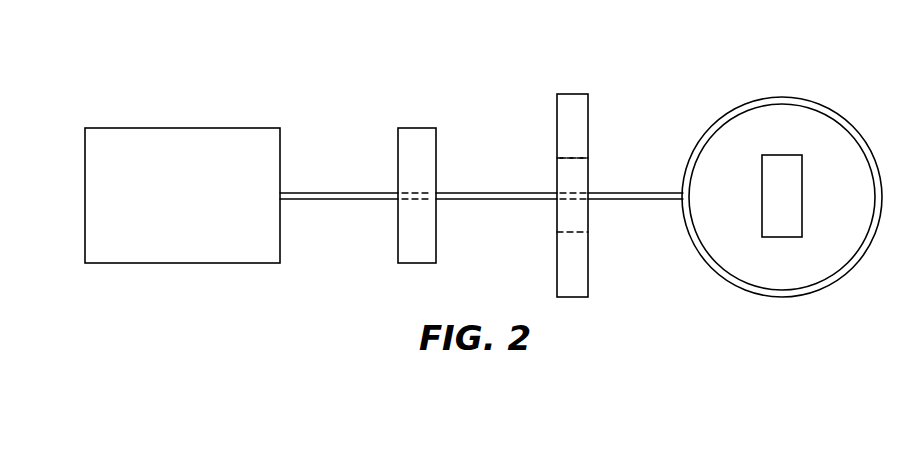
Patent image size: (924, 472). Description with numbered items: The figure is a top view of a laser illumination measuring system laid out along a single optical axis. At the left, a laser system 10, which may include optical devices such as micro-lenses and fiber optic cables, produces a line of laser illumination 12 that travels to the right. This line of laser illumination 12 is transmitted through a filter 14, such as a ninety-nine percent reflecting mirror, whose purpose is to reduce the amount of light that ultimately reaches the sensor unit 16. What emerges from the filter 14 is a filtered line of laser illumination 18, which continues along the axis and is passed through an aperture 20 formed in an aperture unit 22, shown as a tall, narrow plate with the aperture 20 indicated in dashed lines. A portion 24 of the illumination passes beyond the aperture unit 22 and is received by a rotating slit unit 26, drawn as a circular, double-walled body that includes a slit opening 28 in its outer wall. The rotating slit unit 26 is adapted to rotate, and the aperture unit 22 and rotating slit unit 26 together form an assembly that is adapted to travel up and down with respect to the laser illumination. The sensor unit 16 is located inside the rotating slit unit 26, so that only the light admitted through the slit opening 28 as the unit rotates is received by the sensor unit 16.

The laser system 10 is at (242, 134).
The line of laser illumination 12 is at (336, 193).
The filter 14 is at (420, 135).
The sensor unit 16 is at (783, 160).
The filtered line of laser illumination 18 is at (497, 193).
The aperture 20 is at (586, 172).
The aperture unit 22 is at (572, 102).
The portion of the illumination 24 is at (660, 193).
The rotating slit unit 26 is at (780, 98).
The slit opening 28 is at (735, 285).